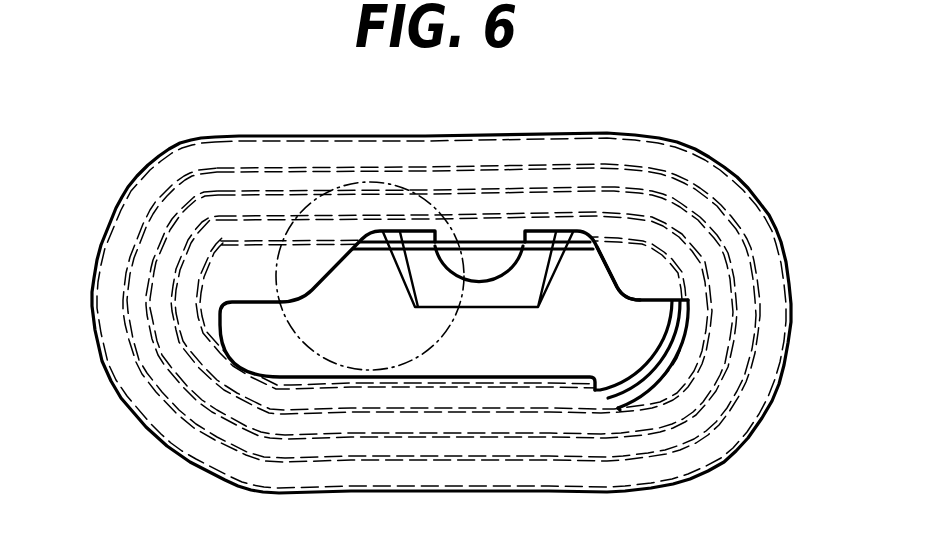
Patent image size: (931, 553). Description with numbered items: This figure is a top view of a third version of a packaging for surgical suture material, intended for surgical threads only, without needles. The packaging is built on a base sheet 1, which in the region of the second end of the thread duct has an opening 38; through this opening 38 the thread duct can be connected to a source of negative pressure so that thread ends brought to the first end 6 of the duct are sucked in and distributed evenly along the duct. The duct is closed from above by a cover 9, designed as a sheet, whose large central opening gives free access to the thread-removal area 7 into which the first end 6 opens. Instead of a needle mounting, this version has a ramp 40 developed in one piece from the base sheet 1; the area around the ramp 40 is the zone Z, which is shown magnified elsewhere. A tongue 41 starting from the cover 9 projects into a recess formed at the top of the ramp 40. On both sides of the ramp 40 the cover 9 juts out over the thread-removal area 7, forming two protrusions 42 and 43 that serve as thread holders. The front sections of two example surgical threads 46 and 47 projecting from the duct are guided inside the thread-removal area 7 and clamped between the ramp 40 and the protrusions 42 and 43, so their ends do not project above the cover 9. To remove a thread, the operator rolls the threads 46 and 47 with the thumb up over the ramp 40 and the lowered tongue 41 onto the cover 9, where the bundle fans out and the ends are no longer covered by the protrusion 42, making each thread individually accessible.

The opening 38 is at (168, 178).
The protrusion 43 is at (620, 250).
The cover 9 is at (647, 282).
The protrusion 42 is at (250, 284).
The thread-removal area 7 is at (355, 321).
The tongue 41 is at (490, 263).
The base sheet 1 is at (566, 359).
The first end of the thread duct 6 is at (596, 392).
The surgical thread 46 is at (672, 348).
The surgical thread 47 is at (618, 408).
The ramp 40 is at (472, 300).
The zone Z is at (307, 352).